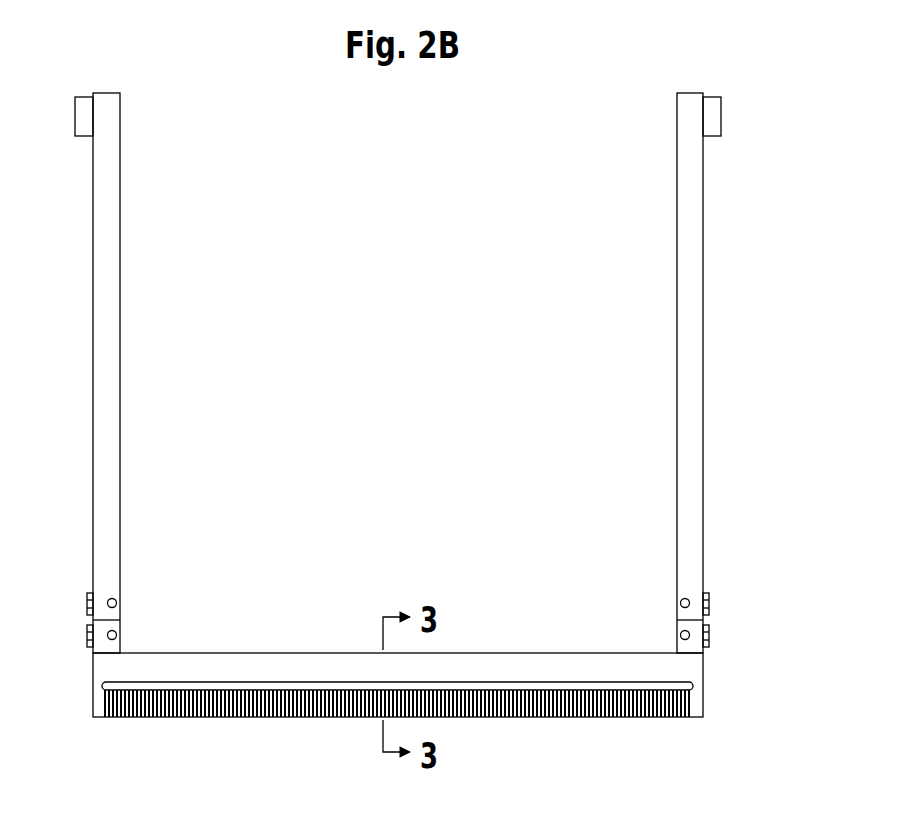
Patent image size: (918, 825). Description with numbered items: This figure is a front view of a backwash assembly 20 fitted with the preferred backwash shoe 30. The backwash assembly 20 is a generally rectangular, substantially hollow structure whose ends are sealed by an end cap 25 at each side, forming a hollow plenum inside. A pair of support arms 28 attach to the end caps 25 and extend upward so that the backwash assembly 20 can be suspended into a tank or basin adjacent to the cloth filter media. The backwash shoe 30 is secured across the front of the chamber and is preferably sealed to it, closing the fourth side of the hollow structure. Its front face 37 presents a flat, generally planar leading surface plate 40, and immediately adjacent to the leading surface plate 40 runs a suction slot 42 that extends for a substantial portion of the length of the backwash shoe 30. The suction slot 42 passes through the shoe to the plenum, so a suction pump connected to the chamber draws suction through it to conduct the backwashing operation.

The backwash assembly 20 is at (415, 409).
The support arms 28 is at (120, 322).
The end cap 25 is at (87, 647).
The backwash shoe 30 is at (437, 665).
The leading surface plate 40 is at (197, 664).
The front face 37 is at (474, 671).
The suction slot 42 is at (693, 686).